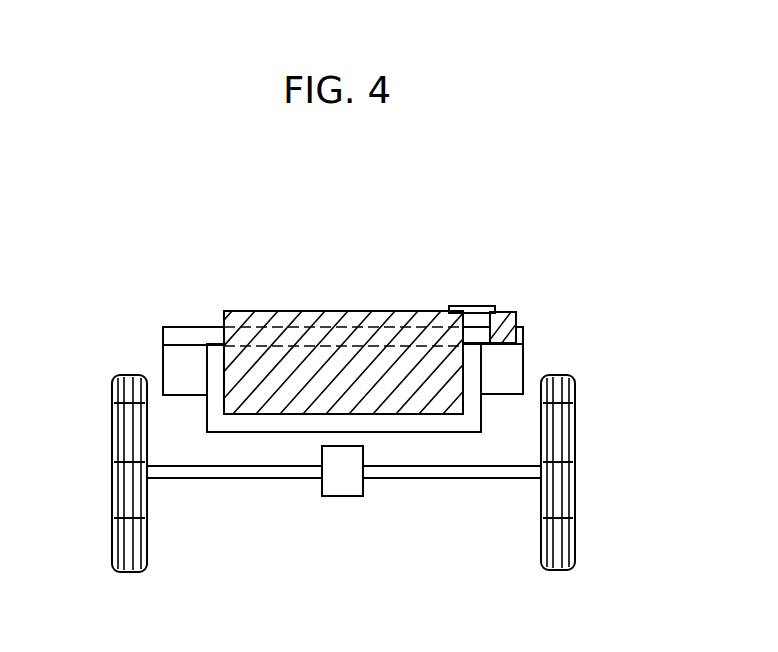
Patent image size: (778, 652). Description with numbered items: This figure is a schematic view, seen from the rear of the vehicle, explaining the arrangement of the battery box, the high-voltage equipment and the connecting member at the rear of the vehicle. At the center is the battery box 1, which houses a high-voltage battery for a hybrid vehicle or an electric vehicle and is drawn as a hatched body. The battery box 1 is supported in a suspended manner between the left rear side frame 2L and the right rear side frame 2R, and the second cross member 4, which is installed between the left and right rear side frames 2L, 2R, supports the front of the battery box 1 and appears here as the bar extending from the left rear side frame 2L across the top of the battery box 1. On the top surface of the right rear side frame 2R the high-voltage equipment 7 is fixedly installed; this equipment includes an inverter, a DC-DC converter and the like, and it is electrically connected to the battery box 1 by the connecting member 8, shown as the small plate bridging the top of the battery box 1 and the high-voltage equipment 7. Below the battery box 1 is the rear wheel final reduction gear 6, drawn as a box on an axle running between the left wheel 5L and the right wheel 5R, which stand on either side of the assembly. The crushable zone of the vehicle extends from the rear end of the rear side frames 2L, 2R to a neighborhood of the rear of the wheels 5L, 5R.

The battery box 1 is at (353, 244).
The second cross member 4 is at (190, 335).
The left rear side frame 2L is at (170, 365).
The right rear side frame 2R is at (513, 365).
The connecting member 8 is at (471, 306).
The high-voltage equipment 7 is at (509, 312).
The left wheel 5L is at (112, 423).
The right wheel 5R is at (576, 423).
The rear wheel final reduction gear 6 is at (341, 497).